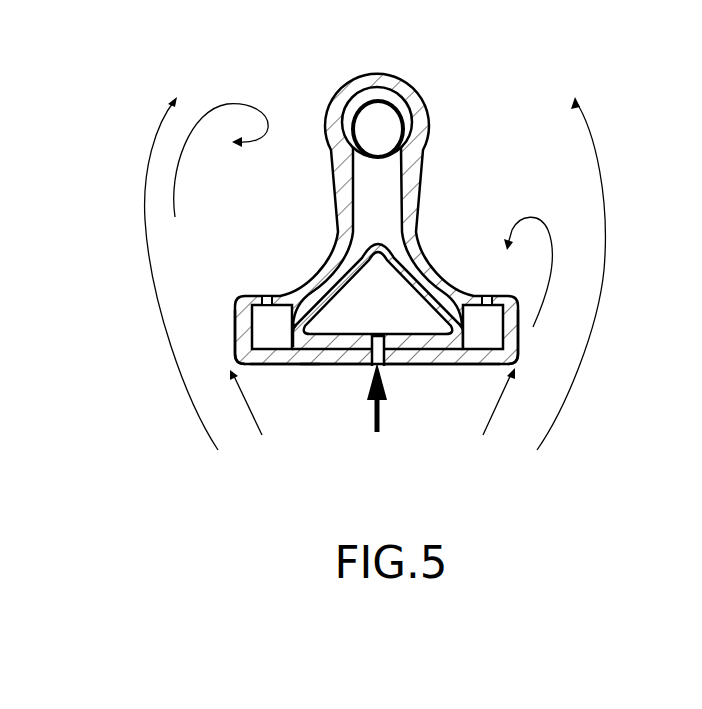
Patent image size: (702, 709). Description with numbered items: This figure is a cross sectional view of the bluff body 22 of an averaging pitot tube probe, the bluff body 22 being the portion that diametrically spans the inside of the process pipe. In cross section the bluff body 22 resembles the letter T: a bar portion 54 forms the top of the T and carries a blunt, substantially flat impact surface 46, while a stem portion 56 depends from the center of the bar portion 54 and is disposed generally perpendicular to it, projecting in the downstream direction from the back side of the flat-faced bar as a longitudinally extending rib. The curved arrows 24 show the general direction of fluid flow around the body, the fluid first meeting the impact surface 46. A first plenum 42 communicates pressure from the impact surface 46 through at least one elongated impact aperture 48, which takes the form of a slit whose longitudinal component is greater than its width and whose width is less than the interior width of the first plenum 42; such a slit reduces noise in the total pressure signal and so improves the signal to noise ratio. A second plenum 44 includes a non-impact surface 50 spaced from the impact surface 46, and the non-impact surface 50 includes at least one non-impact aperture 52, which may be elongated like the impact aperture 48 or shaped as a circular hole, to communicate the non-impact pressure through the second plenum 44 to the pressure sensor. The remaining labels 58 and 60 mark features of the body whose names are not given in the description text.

The bluff body 22 is at (464, 104).
The directional arrow 24 is at (157, 295).
The first plenum 42 is at (370, 268).
The second plenum 44 is at (258, 333).
The impact surface 46 is at (453, 365).
The impact aperture 48 is at (372, 352).
The non-impact surface 50 is at (296, 288).
The non-impact aperture 52 is at (268, 294).
The bar portion 54 is at (286, 377).
The stem portion 56 is at (426, 205).
The right side 58 is at (516, 354).
The left side 60 is at (237, 358).